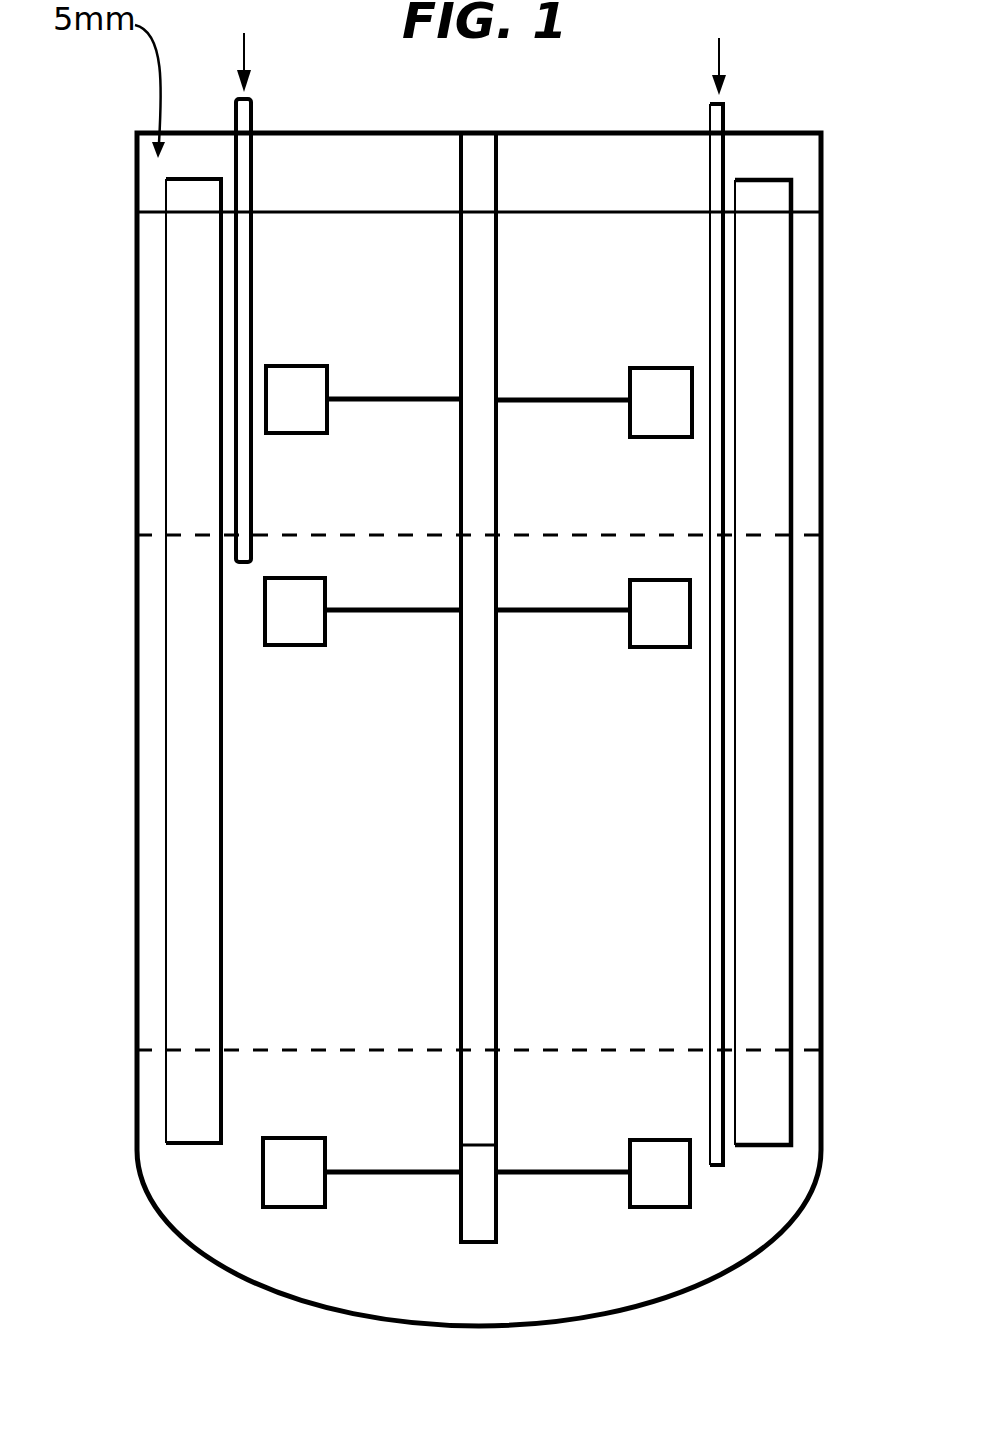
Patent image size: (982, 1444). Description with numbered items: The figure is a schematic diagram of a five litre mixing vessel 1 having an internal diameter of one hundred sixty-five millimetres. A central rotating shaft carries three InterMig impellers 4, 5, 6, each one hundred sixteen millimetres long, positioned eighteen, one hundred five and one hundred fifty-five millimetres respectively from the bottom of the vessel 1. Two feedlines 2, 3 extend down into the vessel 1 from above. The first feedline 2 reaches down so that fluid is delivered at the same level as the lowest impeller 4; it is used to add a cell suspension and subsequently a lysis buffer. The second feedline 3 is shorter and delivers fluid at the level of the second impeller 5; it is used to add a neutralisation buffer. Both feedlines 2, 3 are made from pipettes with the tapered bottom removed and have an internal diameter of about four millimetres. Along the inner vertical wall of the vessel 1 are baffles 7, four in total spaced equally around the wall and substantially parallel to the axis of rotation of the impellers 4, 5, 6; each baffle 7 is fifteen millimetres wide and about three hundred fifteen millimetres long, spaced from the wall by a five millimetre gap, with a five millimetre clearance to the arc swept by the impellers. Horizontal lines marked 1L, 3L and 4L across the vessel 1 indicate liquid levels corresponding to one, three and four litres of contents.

The vessel 1 is at (134, 950).
The first feedline 2 is at (709, 985).
The second feedline 3 is at (253, 293).
The lowest impeller 4 is at (560, 1172).
The second impeller 5 is at (562, 610).
The third impeller 6 is at (563, 398).
The baffle 7 is at (222, 883).
The 1 liter liquid level 1L is at (509, 1050).
The 3 liter liquid level 3L is at (509, 538).
The 4 liter liquid level 4L is at (510, 218).